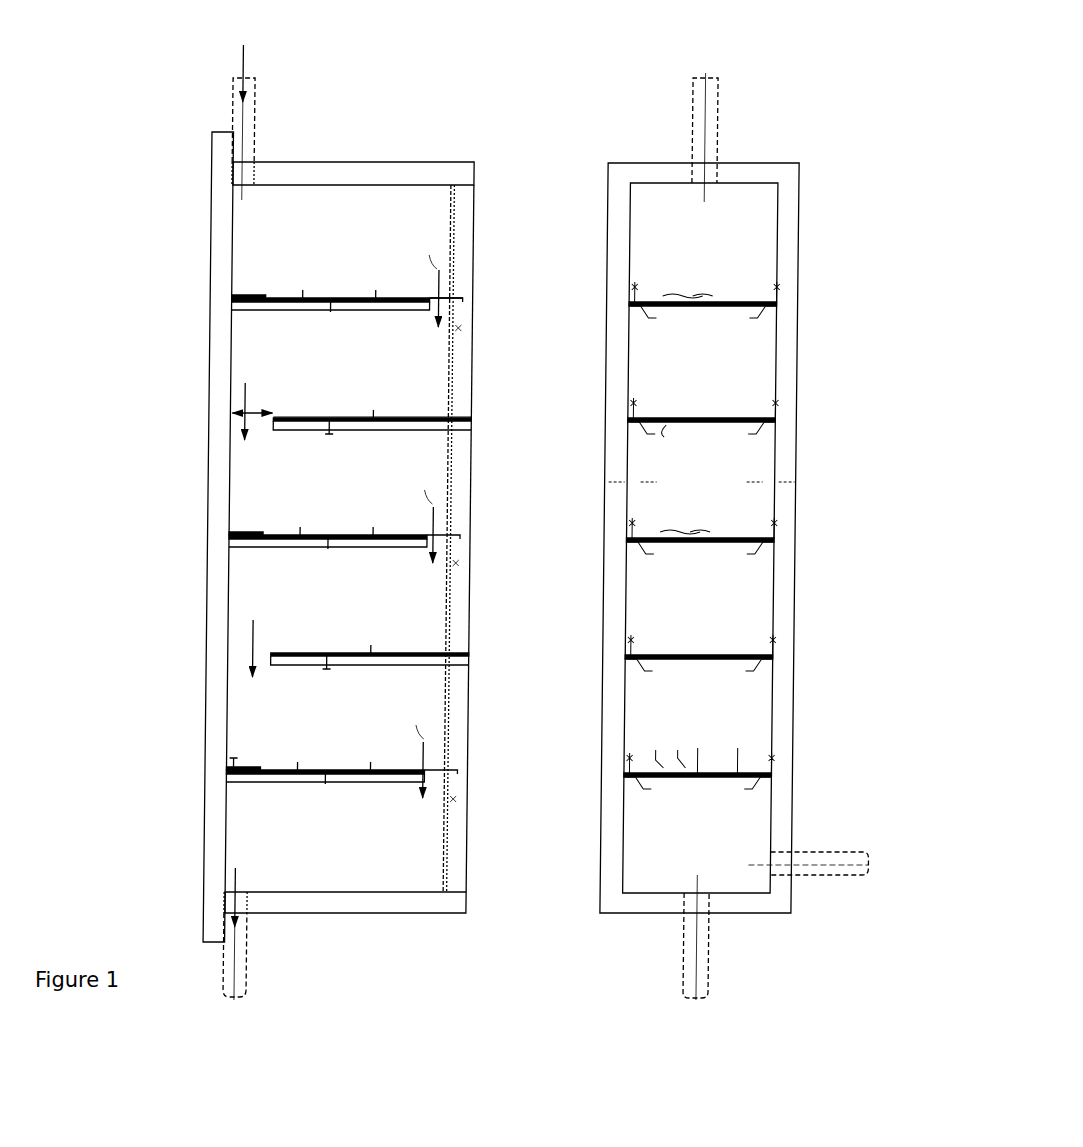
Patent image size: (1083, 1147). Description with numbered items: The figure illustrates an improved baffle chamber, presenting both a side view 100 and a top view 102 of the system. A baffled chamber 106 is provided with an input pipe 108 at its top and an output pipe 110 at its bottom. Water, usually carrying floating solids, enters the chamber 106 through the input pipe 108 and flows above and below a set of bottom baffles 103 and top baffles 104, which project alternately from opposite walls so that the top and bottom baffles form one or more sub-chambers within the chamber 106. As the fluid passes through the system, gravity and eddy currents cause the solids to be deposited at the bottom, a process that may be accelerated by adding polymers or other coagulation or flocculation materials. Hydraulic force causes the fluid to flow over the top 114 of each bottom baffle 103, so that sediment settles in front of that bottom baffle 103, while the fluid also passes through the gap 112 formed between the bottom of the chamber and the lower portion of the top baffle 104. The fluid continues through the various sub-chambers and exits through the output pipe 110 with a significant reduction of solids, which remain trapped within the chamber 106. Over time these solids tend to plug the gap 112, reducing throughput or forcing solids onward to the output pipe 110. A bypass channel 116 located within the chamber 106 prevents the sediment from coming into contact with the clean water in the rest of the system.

The side view 100 is at (357, 120).
The top view 102 is at (768, 102).
The bottom baffle 103 is at (243, 295).
The top baffle 104 is at (268, 411).
The baffled chamber 106 is at (308, 207).
The input pipe 108 is at (255, 120).
The output pipe 110 is at (688, 982).
The gap 112 is at (362, 416).
The top of the bottom baffle 114 is at (443, 297).
The bypass channel 116 is at (808, 867).